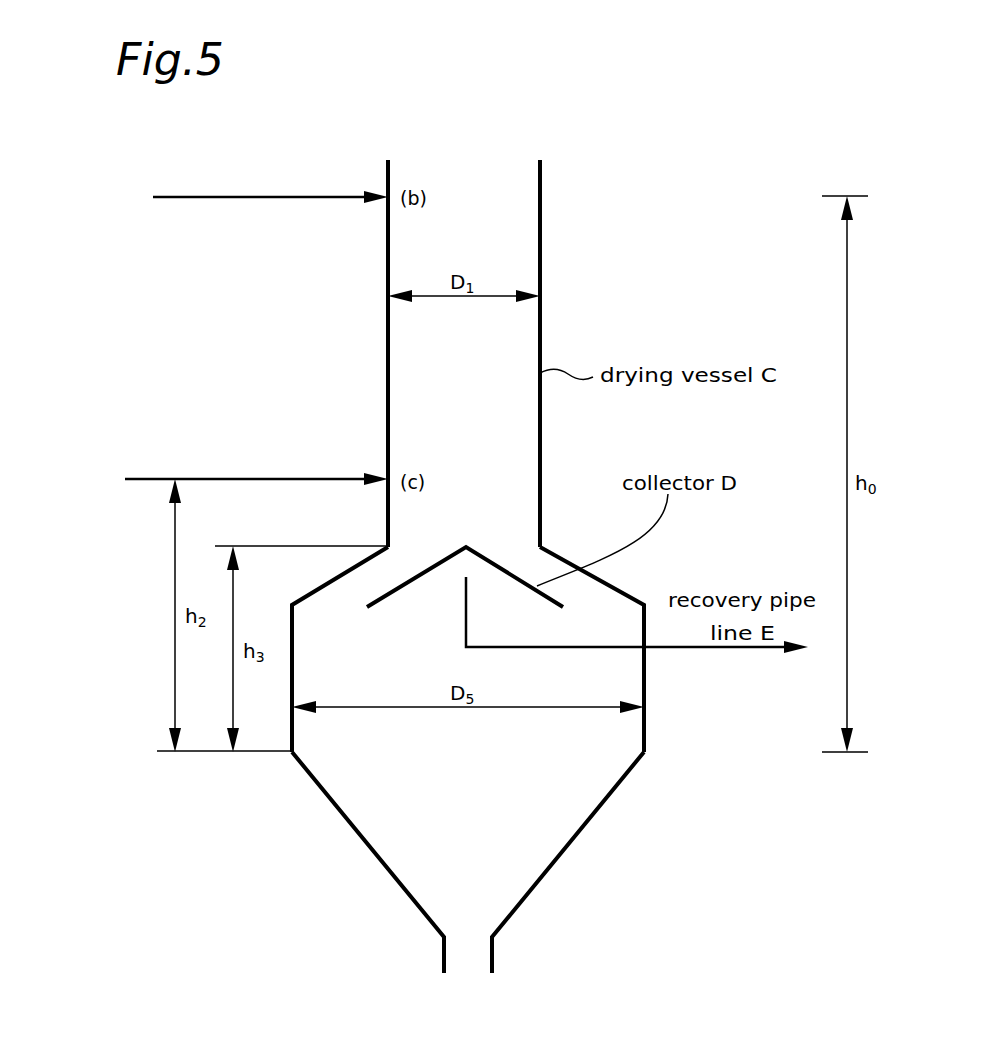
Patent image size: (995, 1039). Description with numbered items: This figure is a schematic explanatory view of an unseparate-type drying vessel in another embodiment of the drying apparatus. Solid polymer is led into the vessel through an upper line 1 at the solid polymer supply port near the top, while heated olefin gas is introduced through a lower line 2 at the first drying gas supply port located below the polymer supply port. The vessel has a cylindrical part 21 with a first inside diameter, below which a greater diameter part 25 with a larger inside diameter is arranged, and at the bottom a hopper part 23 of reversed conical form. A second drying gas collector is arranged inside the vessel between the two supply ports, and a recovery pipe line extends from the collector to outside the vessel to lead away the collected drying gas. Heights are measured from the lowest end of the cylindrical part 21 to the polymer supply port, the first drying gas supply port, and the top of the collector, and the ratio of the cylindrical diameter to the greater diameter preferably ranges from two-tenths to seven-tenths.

The upper line 1 is at (271, 197).
The lower line 2 is at (278, 479).
The cylindrical part 21 is at (540, 253).
The hopper part 23 is at (565, 847).
The greater diameter part 25 is at (644, 688).